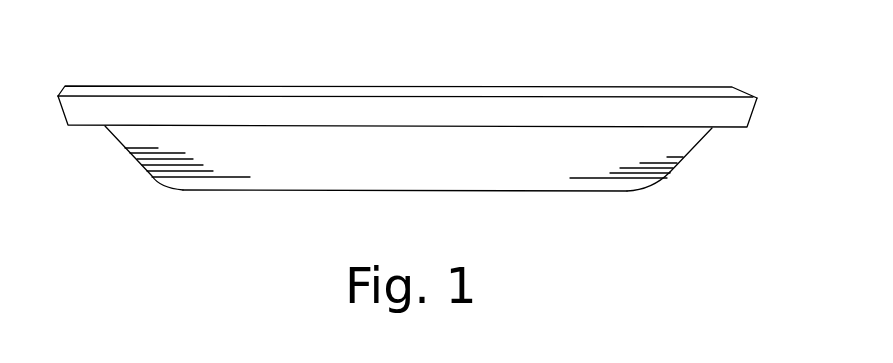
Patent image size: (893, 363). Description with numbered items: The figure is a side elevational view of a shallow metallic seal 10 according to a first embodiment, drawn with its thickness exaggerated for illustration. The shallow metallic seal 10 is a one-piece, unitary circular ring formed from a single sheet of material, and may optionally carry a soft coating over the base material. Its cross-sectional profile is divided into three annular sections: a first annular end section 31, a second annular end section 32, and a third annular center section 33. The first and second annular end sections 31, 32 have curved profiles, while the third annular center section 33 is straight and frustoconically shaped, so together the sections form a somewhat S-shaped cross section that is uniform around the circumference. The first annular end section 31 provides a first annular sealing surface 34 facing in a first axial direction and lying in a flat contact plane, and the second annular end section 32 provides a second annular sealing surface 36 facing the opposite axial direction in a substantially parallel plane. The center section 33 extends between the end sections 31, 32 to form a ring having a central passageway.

The shallow metallic seal 10 is at (573, 48).
The first annular end section 31 is at (738, 87).
The second annular end section 32 is at (627, 187).
The third annular center section 33 is at (628, 147).
The first annular sealing surface 34 is at (603, 87).
The second annular sealing surface 36 is at (542, 193).